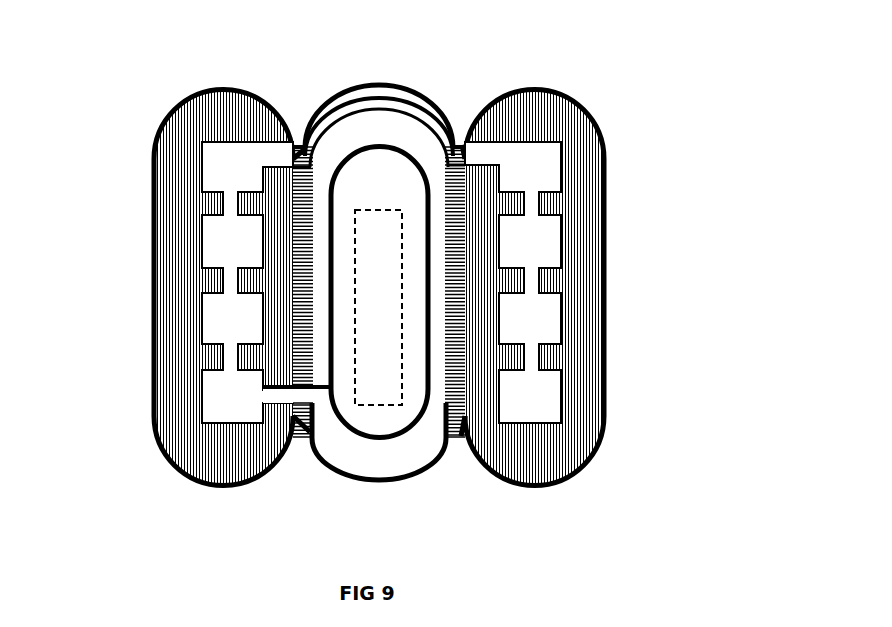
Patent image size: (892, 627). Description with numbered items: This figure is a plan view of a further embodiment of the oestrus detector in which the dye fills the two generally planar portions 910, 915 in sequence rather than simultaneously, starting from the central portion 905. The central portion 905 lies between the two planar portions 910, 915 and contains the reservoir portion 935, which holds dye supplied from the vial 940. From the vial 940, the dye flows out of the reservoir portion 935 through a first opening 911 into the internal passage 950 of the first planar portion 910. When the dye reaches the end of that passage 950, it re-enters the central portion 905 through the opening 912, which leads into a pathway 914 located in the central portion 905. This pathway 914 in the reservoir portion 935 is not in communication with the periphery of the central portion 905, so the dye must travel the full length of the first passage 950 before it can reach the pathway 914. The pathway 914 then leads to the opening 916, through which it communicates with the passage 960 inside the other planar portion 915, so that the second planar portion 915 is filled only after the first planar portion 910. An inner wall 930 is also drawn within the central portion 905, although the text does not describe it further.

The central portion 905 is at (358, 458).
The generally planar portion 910 is at (182, 263).
The first opening 911 is at (320, 397).
The opening 912 is at (293, 163).
The pathway 914 is at (343, 105).
The generally planar portion 915 is at (587, 197).
The opening 916 is at (466, 157).
The inner oval wall 930 is at (390, 482).
The reservoir portion 935 is at (407, 432).
The vial 940 is at (383, 210).
The internal passage 950 is at (196, 413).
The passage 960 is at (557, 428).